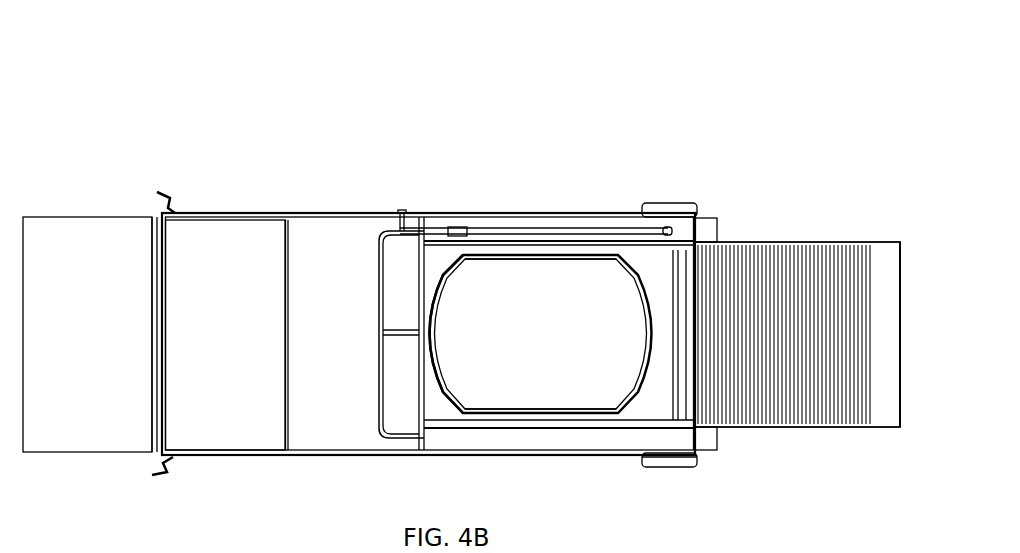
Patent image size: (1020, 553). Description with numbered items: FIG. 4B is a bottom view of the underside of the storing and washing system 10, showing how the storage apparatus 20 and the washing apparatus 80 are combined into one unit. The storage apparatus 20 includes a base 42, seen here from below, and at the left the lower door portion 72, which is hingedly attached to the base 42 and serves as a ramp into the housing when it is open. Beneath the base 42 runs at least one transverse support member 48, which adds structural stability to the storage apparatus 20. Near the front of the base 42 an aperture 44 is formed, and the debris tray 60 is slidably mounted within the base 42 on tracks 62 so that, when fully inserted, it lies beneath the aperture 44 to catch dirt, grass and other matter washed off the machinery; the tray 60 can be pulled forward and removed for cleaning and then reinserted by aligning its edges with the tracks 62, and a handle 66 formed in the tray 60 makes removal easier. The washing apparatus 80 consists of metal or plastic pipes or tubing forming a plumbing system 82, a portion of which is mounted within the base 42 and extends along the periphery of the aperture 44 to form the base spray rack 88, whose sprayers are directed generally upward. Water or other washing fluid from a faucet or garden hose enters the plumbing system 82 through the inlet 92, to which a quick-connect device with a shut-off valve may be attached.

The storing and washing system 10 is at (235, 178).
The storage apparatus 20 is at (305, 458).
The base 42 is at (236, 341).
The aperture 44 is at (442, 277).
The transverse support member 48 is at (284, 280).
The debris tray 60 is at (792, 242).
The tracks 62 is at (542, 243).
The handle 66 is at (901, 262).
The lower door portion 72 is at (98, 341).
The washing apparatus 80 is at (375, 306).
The plumbing system 82 is at (380, 382).
The base spray rack 88 is at (520, 335).
The inlet 92 is at (401, 212).